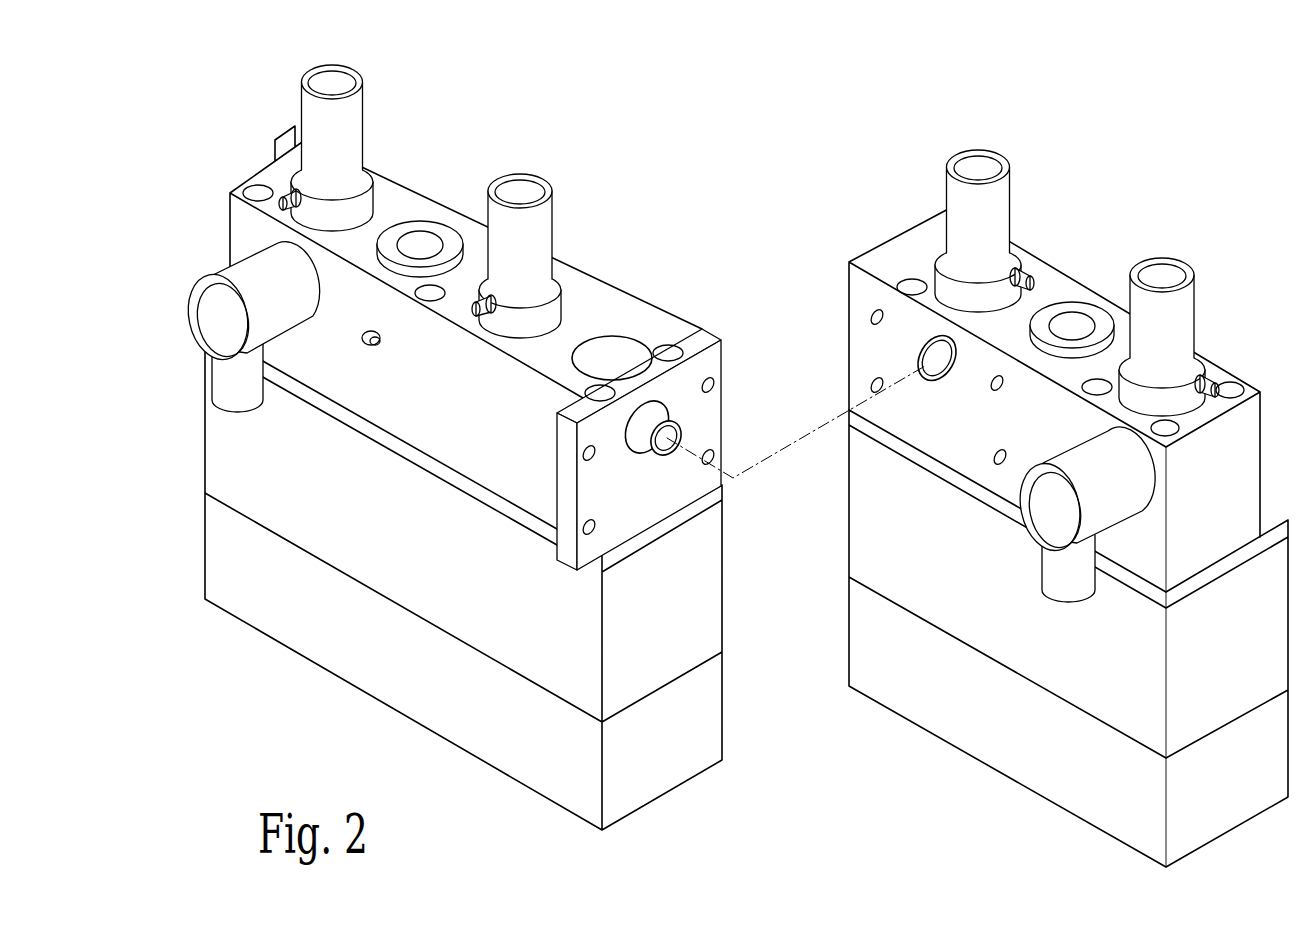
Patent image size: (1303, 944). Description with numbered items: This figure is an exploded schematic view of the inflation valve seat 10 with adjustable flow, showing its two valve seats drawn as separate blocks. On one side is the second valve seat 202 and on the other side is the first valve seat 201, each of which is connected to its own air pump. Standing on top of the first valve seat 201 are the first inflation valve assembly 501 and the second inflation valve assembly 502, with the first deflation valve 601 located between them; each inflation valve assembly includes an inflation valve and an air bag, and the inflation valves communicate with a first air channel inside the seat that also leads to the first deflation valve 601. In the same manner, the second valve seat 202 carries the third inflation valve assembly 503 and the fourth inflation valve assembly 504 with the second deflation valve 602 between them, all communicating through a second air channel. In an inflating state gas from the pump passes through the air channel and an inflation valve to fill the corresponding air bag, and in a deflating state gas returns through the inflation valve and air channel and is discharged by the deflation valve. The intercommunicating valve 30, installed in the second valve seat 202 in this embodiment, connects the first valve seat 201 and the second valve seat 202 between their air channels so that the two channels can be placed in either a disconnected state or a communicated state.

The inflation valve seat 10 is at (1302, 72).
The first valve seat 201 is at (950, 729).
The second valve seat 202 is at (340, 650).
The intercommunicating valve 30 is at (630, 352).
The first inflation valve assembly 501 is at (1183, 258).
The second inflation valve assembly 502 is at (957, 155).
The third inflation valve assembly 503 is at (537, 178).
The fourth inflation valve assembly 504 is at (303, 74).
The first deflation valve 601 is at (1077, 303).
The second deflation valve 602 is at (428, 222).